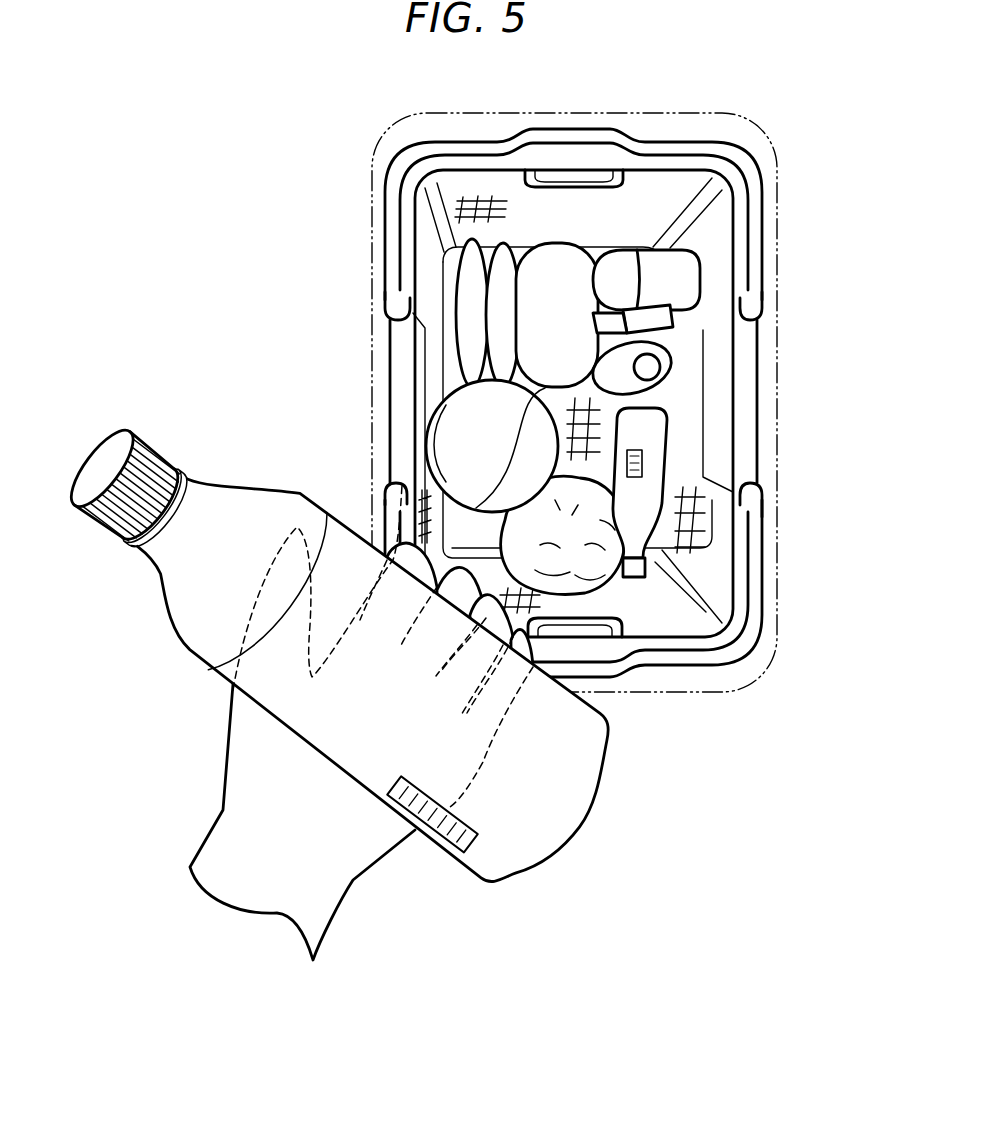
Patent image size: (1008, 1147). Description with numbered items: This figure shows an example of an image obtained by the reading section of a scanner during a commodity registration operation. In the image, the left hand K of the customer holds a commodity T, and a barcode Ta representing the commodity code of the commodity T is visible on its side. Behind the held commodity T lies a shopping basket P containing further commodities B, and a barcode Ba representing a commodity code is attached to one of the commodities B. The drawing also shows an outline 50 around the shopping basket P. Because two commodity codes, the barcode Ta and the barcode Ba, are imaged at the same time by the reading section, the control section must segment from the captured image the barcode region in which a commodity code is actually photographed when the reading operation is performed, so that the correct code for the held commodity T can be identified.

The commodities B is at (595, 288).
The barcode Ba is at (642, 477).
The shopping basket P is at (757, 365).
The basket placement region 50 is at (775, 650).
The commodity T is at (257, 490).
The barcode Ta is at (467, 845).
The left hand K is at (335, 667).